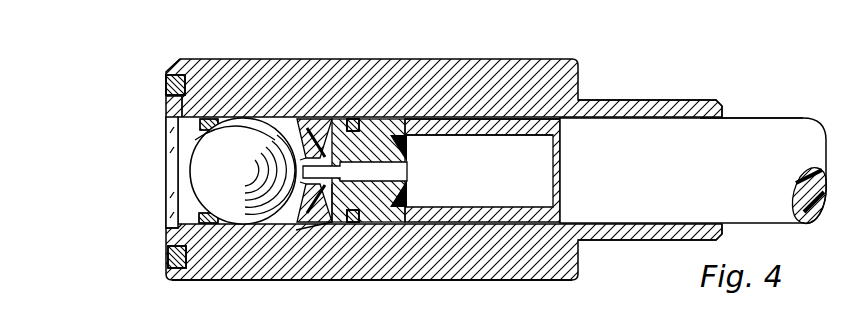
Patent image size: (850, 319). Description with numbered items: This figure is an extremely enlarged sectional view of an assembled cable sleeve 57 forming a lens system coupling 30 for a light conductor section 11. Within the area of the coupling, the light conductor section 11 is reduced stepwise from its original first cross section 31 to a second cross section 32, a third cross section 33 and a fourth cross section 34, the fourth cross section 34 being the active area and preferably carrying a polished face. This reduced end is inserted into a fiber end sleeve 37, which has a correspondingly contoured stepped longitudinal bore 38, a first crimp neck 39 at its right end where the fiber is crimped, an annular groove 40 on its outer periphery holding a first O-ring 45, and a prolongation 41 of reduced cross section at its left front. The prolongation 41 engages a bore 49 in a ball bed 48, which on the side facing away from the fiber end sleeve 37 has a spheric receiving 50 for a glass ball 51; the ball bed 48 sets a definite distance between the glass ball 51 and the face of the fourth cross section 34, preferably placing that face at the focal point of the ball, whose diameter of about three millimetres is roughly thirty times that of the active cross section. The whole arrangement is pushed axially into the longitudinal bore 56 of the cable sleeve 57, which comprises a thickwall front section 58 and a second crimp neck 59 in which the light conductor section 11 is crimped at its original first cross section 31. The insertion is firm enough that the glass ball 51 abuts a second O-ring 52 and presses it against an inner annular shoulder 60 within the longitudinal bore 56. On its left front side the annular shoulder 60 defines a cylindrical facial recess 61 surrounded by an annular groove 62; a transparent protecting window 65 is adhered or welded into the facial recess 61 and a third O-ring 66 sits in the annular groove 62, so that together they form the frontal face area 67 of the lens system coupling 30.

The light conductor section 11 is at (792, 110).
The lens system coupling 30 is at (458, 281).
The first cross section 31 is at (748, 128).
The second cross section 32 is at (526, 140).
The third cross section 33 is at (373, 140).
The fourth cross section 34 is at (334, 118).
The fiber end sleeve 37 is at (437, 117).
The stepped longitudinal bore 38 is at (481, 135).
The first crimp neck 39 is at (585, 106).
The annular groove 40 is at (353, 224).
The prolongation 41 is at (296, 230).
The first O-ring 45 is at (362, 224).
The ball bed 48 is at (268, 226).
The bore 49 is at (299, 124).
The spheric receiving 50 is at (257, 117).
The glass ball 51 is at (240, 120).
The second O-ring 52 is at (210, 118).
The longitudinal bore 56 is at (321, 228).
The cable sleeve 57 is at (390, 55).
The thickwall front section 58 is at (553, 281).
The second crimp neck 59 is at (628, 239).
The inner annular shoulder 60 is at (197, 228).
The facial recess 61 is at (166, 232).
The annular groove 62 is at (166, 80).
The transparent protecting window 65 is at (168, 170).
The third O-ring 66 is at (166, 90).
The frontal face area 67 is at (168, 105).